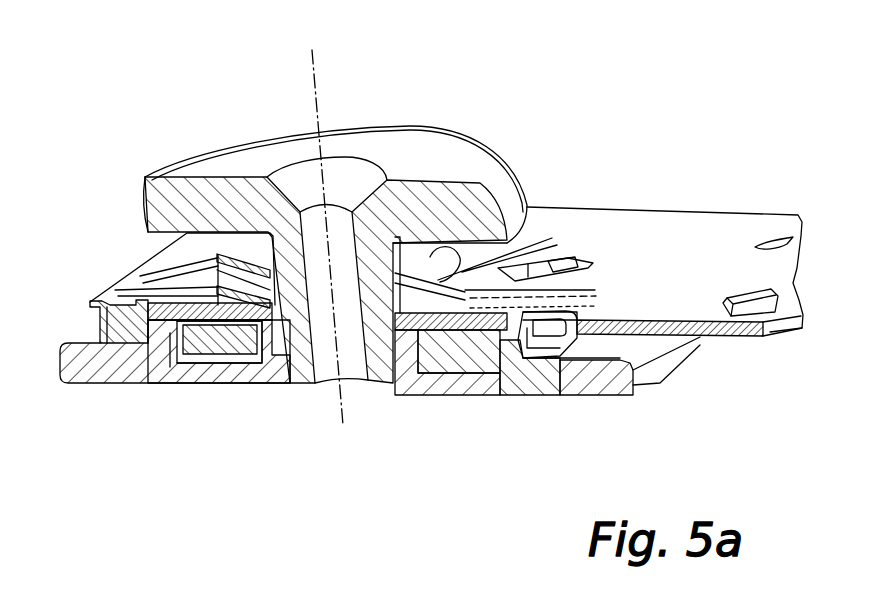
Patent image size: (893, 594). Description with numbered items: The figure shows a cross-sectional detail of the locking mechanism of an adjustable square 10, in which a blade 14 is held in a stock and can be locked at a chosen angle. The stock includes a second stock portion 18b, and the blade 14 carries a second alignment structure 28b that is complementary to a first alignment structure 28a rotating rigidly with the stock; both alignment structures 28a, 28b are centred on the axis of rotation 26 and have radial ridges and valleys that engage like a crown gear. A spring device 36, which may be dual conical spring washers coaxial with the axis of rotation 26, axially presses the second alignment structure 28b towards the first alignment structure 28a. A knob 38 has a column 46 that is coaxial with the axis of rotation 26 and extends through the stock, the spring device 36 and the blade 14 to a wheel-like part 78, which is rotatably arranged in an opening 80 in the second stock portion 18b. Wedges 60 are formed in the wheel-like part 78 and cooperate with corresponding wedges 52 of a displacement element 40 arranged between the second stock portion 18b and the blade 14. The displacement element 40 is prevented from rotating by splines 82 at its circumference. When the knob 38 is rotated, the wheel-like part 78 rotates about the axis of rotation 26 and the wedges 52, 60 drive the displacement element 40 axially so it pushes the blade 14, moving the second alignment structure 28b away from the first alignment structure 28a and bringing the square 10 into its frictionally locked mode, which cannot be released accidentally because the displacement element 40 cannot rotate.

The square 10 is at (627, 125).
The blade 14 is at (706, 235).
The second stock portion 18b is at (636, 397).
The axis of rotation 26 is at (318, 122).
The first alignment structure 28a is at (122, 345).
The second alignment structure 28b is at (100, 327).
The spring device 36 is at (462, 254).
The knob 38 is at (477, 172).
The displacement element 40 is at (470, 393).
The column 46 is at (205, 268).
The wedges of the displacement element 52 is at (447, 393).
The wedges 60 is at (423, 392).
The wheel-like part 78 is at (400, 385).
The opening 80 is at (290, 393).
The splines 82 is at (183, 383).